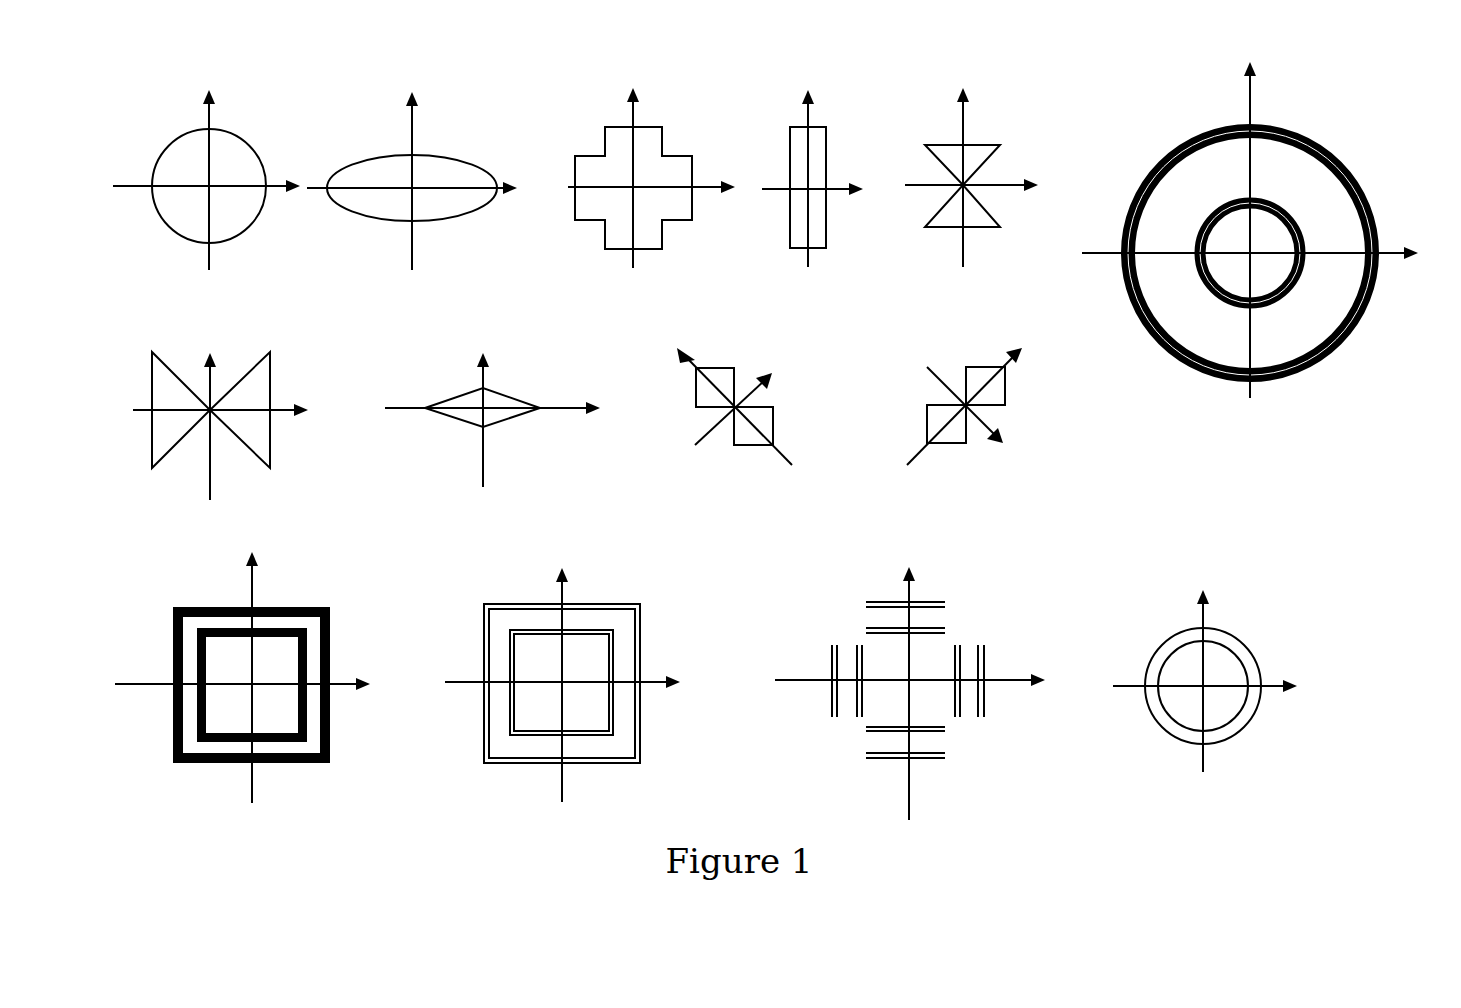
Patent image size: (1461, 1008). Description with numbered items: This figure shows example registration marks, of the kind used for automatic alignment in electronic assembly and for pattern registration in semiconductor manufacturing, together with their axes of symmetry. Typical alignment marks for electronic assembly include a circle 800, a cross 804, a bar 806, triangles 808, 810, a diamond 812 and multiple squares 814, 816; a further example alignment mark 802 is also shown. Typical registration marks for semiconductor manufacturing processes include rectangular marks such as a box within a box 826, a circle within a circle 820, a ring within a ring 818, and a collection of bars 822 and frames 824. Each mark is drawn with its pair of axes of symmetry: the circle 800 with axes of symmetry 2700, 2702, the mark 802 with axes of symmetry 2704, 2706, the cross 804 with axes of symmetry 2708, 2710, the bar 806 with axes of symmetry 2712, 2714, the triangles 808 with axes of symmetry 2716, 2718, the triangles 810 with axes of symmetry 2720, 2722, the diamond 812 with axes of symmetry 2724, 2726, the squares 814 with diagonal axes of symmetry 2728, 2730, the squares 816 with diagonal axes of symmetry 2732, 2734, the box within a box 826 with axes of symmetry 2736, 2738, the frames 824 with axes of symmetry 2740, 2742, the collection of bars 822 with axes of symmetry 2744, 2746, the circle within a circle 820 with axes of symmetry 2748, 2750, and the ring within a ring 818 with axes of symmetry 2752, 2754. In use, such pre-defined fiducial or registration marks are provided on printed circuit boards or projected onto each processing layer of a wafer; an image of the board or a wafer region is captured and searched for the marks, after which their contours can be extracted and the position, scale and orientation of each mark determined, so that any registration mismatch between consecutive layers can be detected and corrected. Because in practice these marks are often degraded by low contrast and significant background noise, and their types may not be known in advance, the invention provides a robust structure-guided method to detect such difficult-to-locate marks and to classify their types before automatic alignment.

The circle 800 is at (178, 137).
The elliptical aperture 802 is at (375, 155).
The cross 804 is at (605, 127).
The bar 806 is at (795, 127).
The triangles 808 is at (940, 145).
The triangles 810 is at (155, 355).
The diamond 812 is at (465, 388).
The multiple squares 814 is at (725, 368).
The multiple squares 816 is at (985, 367).
The ring within a ring 818 is at (1190, 135).
The ring 820 is at (1175, 635).
The collection of bars 822 is at (960, 640).
The frames 824 is at (598, 604).
The box within a box 826 is at (290, 607).
The vertical axis 2700 is at (214, 100).
The horizontal axis 2702 is at (272, 180).
The vertical axis 2704 is at (415, 85).
The horizontal axis 2706 is at (500, 175).
The vertical axis 2708 is at (635, 82).
The horizontal axis 2710 is at (700, 178).
The vertical axis 2712 is at (810, 82).
The horizontal axis 2714 is at (850, 178).
The vertical axis 2716 is at (965, 82).
The horizontal axis 2718 is at (1025, 178).
The vertical axis 2720 is at (212, 340).
The horizontal axis 2722 is at (295, 400).
The vertical axis 2724 is at (485, 345).
The horizontal axis 2726 is at (555, 405).
The diagonal axis 2728 is at (685, 345).
The diagonal axis 2730 is at (770, 365).
The diagonal axis 2732 is at (1020, 340).
The diagonal axis 2734 is at (1012, 440).
The vertical axis 2736 is at (255, 545).
The horizontal axis 2738 is at (350, 678).
The vertical axis 2740 is at (563, 565).
The horizontal axis 2742 is at (665, 678).
The vertical axis 2744 is at (912, 565).
The horizontal axis 2746 is at (1022, 675).
The vertical axis 2748 is at (1210, 592).
The horizontal axis 2750 is at (1265, 678).
The vertical axis 2752 is at (1252, 100).
The horizontal axis 2754 is at (1385, 248).